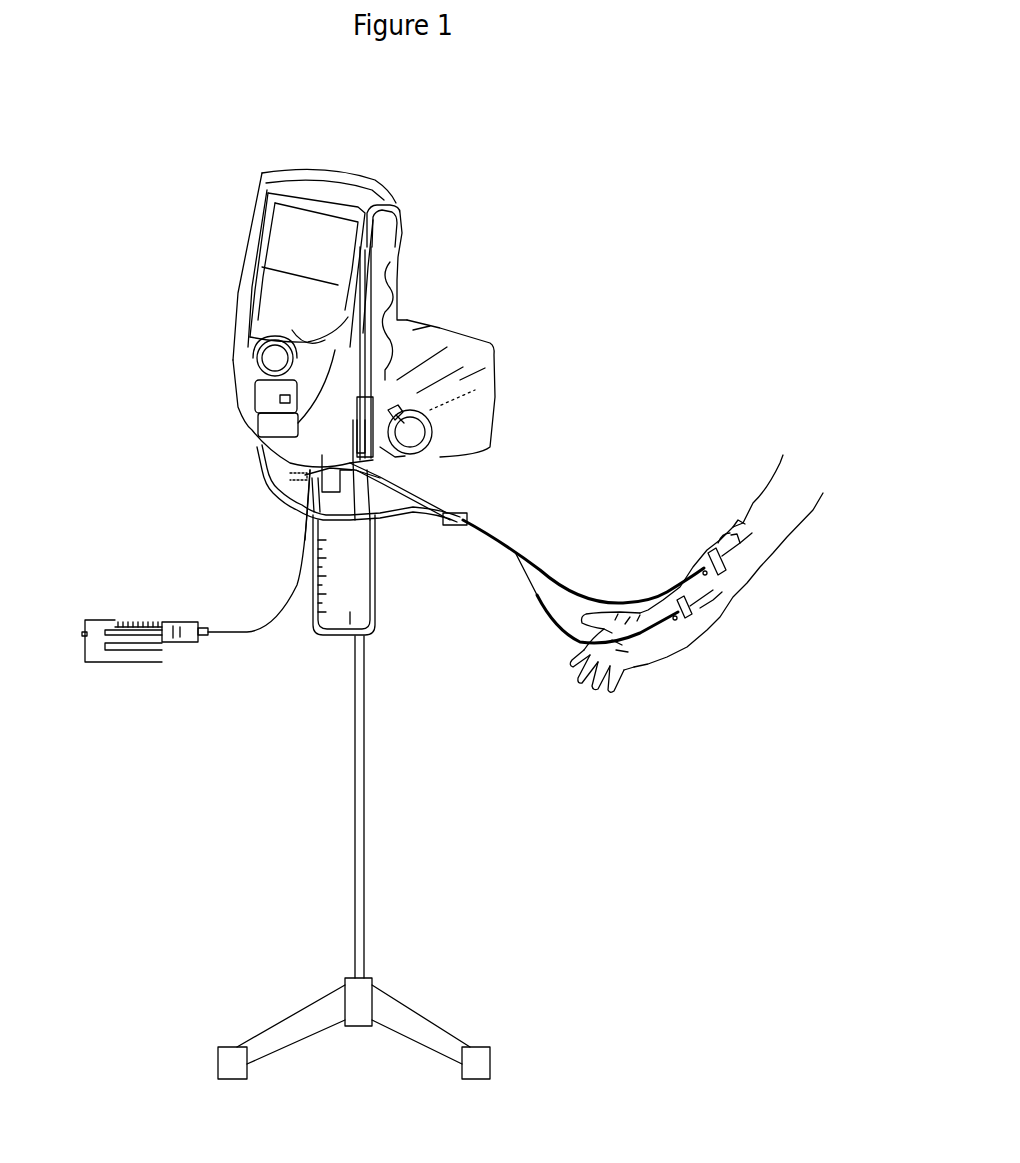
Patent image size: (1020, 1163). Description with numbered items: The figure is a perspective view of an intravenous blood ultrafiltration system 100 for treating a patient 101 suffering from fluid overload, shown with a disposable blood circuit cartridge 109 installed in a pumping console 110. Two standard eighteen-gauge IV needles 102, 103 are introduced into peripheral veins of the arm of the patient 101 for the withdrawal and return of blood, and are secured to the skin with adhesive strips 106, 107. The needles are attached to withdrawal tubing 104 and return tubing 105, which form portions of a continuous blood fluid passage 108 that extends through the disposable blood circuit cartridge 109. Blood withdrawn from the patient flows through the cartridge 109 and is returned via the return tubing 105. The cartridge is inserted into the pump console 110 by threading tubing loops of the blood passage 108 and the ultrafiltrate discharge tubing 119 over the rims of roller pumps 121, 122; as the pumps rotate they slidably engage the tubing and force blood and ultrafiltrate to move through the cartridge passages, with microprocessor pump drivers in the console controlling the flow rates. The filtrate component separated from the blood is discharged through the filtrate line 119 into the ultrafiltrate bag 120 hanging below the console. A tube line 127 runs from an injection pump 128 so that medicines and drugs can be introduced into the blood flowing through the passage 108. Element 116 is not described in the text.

The intravenous blood ultrafiltration system 100 is at (392, 158).
The patient 101 is at (797, 475).
The IV needle 102 is at (700, 597).
The IV needle 103 is at (740, 537).
The withdrawal tubing 104 is at (537, 597).
The return tubing 105 is at (560, 580).
The adhesive strip 106 is at (693, 612).
The adhesive strip 107 is at (708, 558).
The continuous blood fluid passage 108 is at (303, 475).
The disposable blood circuit cartridge 109 is at (243, 455).
The pumping console 110 is at (467, 390).
The pump channel 116 is at (380, 313).
The filtrate line 119 is at (385, 250).
The ultrafiltrate bag 120 is at (350, 613).
The roller pump 121 is at (253, 360).
The roller pump 122 is at (257, 383).
The tube line 127 is at (263, 633).
The injection pump 128 is at (185, 632).